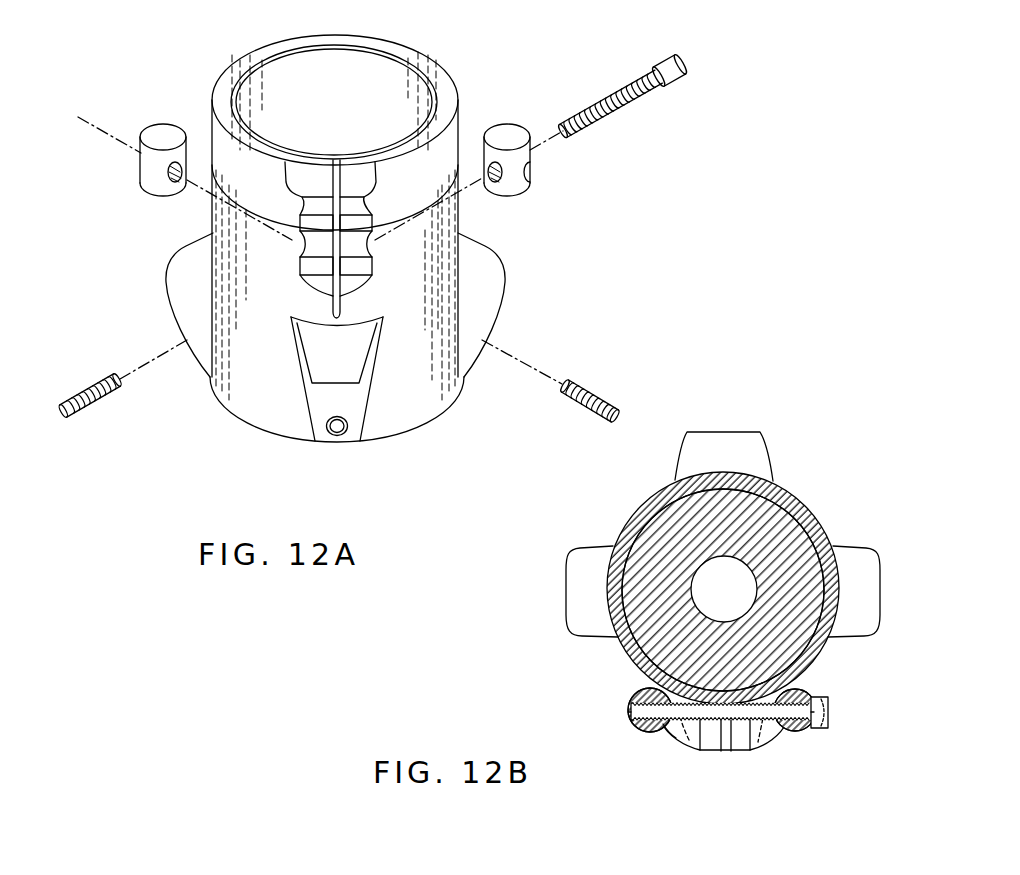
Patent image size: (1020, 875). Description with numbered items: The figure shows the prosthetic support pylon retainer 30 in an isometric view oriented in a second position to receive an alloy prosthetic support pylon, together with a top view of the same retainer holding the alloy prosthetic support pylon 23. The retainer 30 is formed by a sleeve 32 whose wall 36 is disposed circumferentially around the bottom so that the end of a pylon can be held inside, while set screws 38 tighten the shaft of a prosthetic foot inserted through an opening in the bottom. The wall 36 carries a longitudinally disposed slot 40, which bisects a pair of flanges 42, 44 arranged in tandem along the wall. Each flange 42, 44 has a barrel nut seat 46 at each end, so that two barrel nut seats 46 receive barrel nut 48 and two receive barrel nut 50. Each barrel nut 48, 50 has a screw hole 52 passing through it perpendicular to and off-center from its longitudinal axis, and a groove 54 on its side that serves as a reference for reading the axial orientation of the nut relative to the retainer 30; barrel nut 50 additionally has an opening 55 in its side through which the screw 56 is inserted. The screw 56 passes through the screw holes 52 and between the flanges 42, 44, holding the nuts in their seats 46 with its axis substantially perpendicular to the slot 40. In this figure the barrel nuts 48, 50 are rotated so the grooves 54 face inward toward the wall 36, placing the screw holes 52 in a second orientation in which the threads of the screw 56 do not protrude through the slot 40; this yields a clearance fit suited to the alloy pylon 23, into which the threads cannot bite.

In FIG. 12B, the prosthetic support pylon 23 is at (636, 654).
In FIG. 12A, the prosthetic support pylon retainer 30 is at (470, 55).
In FIG. 12B, the prosthetic support pylon retainer 30 is at (800, 470).
In FIG. 12A, the sleeve 32 is at (263, 408).
In FIG. 12B, the sleeve 32 is at (724, 726).
In FIG. 12A, the wall 36 is at (335, 305).
In FIG. 12B, the wall 36 is at (823, 657).
In FIG. 12A, the set screws 38 is at (73, 418).
In FIG. 12A, the slot 40 is at (337, 158).
In FIG. 12B, the slot 40 is at (724, 752).
In FIG. 12A, the flange 42 is at (297, 245).
In FIG. 12A, the flange 44 is at (300, 272).
In FIG. 12B, the flange 44 is at (702, 738).
In FIG. 12A, the barrel nut seats 46 is at (293, 200).
In FIG. 12B, the barrel nut seats 46 is at (672, 738).
In FIG. 12A, the barrel nut 48 is at (146, 172).
In FIG. 12B, the barrel nut 48 is at (646, 733).
In FIG. 12A, the barrel nut 50 is at (525, 190).
In FIG. 12B, the barrel nut 50 is at (807, 731).
In FIG. 12A, the screw hole 52 is at (176, 183).
In FIG. 12B, the screw hole 52 is at (628, 712).
In FIG. 12A, the groove 54 is at (186, 134).
In FIG. 12A, the opening 55 is at (531, 164).
In FIG. 12A, the screw 56 is at (605, 97).
In FIG. 12B, the screw 56 is at (748, 714).